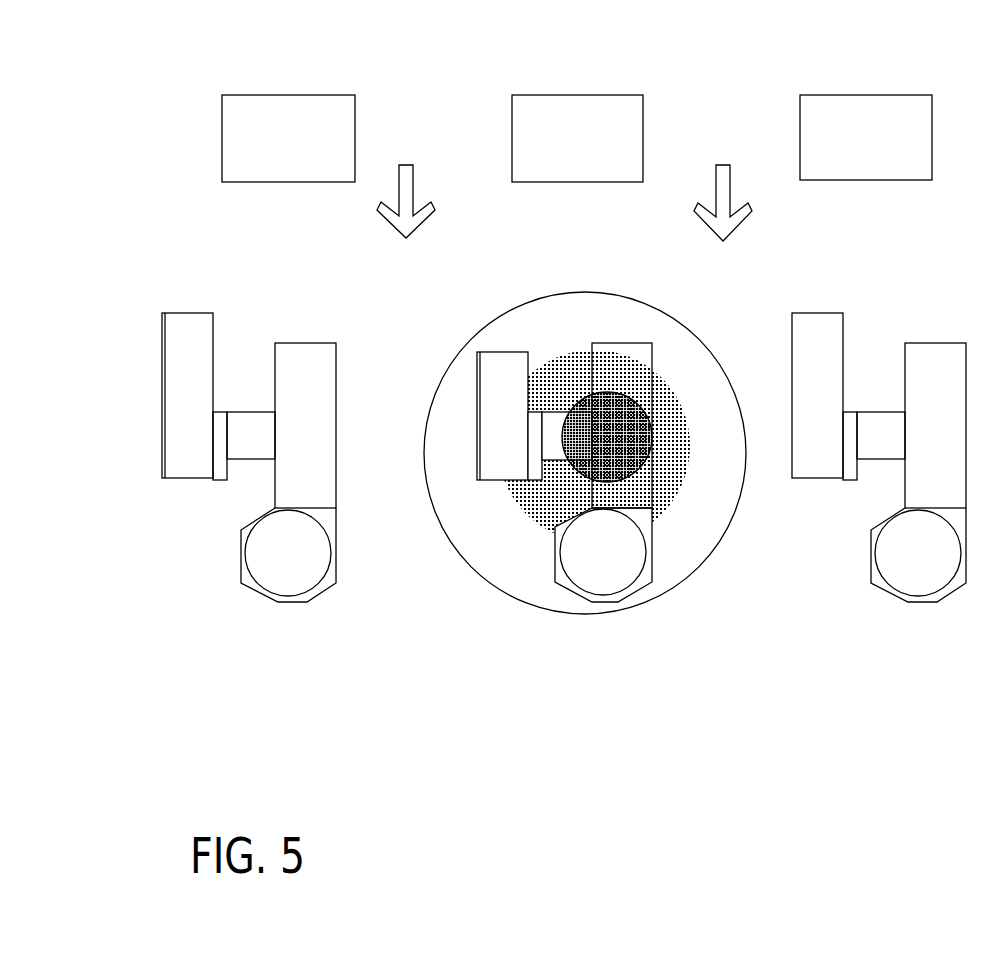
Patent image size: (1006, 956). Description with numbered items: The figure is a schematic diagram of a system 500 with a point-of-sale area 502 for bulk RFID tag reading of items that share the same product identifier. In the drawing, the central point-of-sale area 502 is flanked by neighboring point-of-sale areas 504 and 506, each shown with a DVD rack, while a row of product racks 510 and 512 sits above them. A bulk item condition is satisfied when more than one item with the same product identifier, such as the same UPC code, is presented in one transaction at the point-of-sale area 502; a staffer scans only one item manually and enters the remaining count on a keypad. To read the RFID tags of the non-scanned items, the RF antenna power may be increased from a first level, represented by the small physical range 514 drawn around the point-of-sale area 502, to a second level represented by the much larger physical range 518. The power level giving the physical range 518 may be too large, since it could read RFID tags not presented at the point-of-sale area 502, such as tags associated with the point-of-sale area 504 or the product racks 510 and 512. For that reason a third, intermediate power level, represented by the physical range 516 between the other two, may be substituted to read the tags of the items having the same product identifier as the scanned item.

The system 500 is at (71, 44).
The point-of-sale area 502 is at (615, 343).
The point-of-sale area 504 is at (310, 343).
The right point of sale unit with DVD rack 506 is at (938, 343).
The product rack 510 is at (592, 97).
The product rack 512 is at (876, 95).
The physical range 514 is at (612, 398).
The physical range 516 is at (518, 515).
The physical range 518 is at (713, 547).